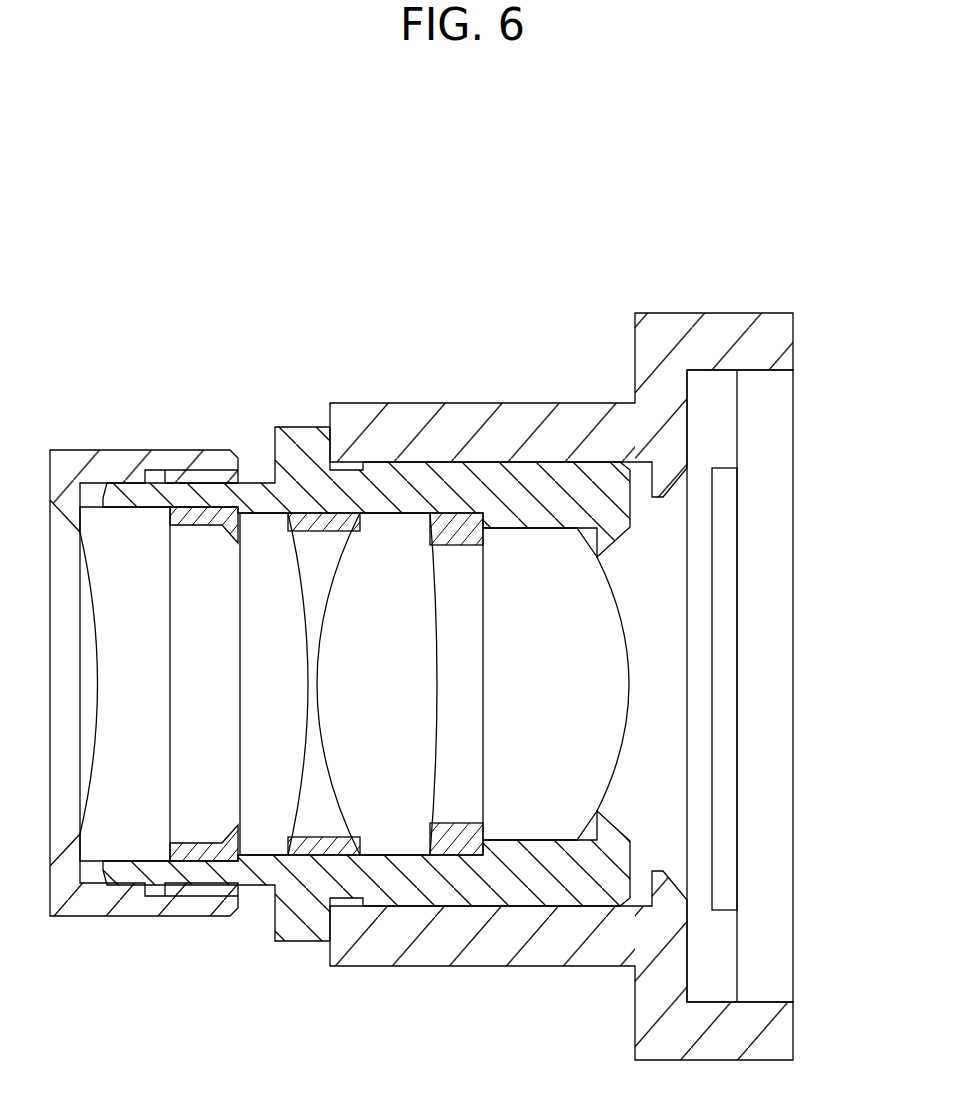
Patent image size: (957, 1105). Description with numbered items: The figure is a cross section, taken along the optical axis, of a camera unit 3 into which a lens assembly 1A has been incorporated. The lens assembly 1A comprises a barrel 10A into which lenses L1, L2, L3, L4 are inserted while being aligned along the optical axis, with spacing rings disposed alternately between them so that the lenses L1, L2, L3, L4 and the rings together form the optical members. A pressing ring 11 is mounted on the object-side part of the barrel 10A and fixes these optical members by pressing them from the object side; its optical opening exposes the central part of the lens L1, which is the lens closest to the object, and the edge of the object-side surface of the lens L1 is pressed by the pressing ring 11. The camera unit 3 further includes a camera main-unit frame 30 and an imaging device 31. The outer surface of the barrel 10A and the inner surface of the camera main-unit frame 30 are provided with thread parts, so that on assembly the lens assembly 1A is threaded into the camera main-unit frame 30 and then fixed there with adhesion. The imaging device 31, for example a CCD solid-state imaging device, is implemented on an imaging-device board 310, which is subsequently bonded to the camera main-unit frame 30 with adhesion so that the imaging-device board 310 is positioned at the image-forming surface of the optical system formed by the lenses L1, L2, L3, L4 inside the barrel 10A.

The camera unit 3 is at (489, 224).
The lens assembly 1A is at (172, 420).
The pressing ring 11 is at (68, 466).
The barrel 10A is at (300, 437).
The camera main-unit frame 30 is at (530, 420).
The imaging device 31 is at (725, 580).
The imaging-device board 310 is at (765, 713).
The lens L1 is at (122, 815).
The lens L2 is at (255, 823).
The lens L3 is at (400, 815).
The lens L4 is at (538, 815).